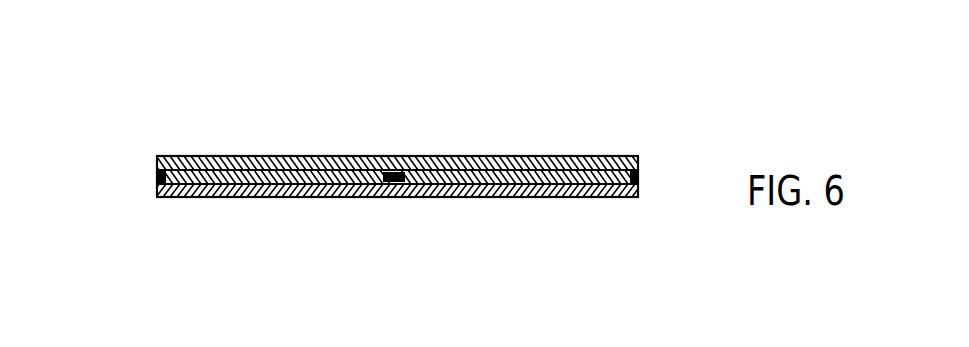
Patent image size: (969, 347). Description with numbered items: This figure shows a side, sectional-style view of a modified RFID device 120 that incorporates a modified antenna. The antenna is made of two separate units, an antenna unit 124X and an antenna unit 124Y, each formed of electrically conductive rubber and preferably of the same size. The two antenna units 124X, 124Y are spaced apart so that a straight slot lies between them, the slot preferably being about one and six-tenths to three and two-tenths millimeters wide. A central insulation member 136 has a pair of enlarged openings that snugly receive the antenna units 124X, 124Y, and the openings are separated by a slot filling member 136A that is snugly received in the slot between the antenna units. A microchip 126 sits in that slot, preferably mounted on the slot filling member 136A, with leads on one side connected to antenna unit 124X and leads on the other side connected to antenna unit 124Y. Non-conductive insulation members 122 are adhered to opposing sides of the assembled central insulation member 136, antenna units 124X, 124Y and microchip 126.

The modified RFID device 120 is at (254, 118).
The non-conductive insulation members 122 is at (538, 157).
The antenna unit 124X is at (290, 197).
The antenna unit 124Y is at (467, 184).
The microchip 126 is at (395, 184).
The central insulation member 136 is at (157, 179).
The slot filling member 136A is at (383, 172).